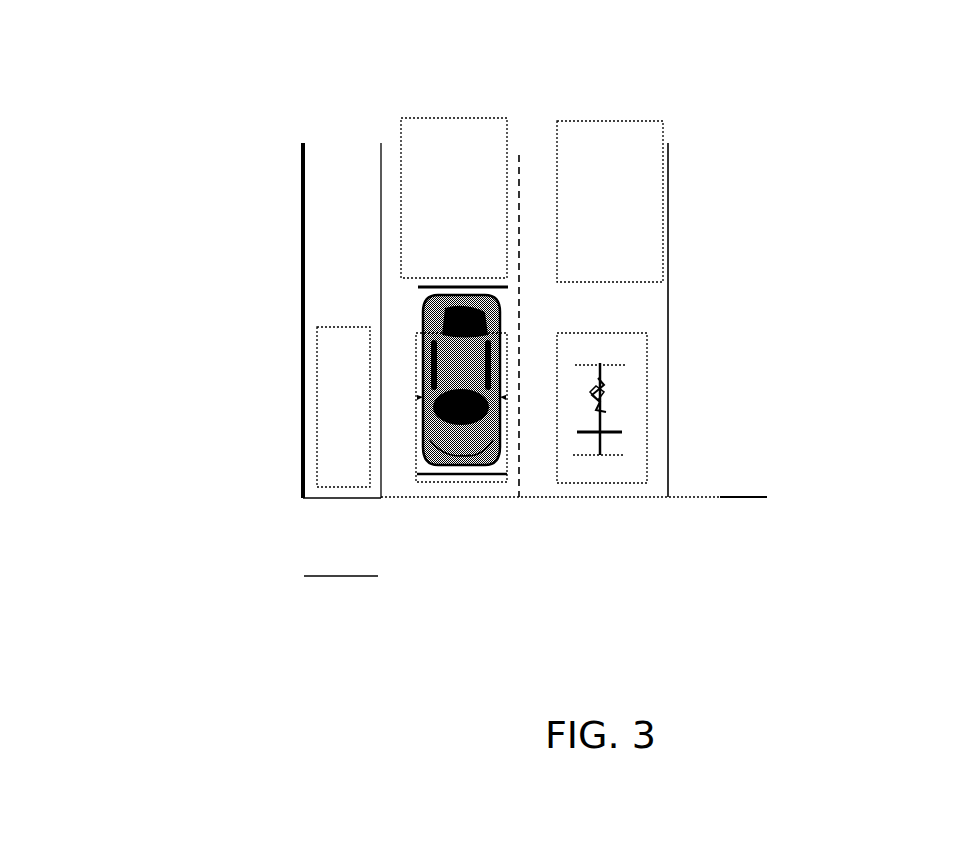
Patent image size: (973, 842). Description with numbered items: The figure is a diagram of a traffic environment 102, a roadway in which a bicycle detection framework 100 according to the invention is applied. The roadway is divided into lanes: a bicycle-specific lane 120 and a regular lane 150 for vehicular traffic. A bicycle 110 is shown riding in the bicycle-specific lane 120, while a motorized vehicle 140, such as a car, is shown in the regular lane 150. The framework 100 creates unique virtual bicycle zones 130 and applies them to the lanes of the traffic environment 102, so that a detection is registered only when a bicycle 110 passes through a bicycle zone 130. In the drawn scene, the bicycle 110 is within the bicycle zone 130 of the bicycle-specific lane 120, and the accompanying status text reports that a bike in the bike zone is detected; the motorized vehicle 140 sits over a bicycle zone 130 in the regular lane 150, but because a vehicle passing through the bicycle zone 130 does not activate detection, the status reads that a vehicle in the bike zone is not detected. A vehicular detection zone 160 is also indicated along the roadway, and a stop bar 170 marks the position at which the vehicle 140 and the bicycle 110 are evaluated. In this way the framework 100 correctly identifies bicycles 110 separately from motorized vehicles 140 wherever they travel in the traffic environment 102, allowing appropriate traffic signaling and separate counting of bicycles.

The bicycle detection framework 100 is at (788, 248).
The traffic environment 102 is at (537, 167).
The bicycle 110 is at (605, 376).
The bicycle-specific lane 120 is at (311, 302).
The bicycle zone 130 is at (650, 425).
The motorized vehicle 140 is at (418, 300).
The regular lane 150 is at (638, 313).
The vehicular detection zone 160 is at (665, 139).
The stop bar 170 is at (275, 576).